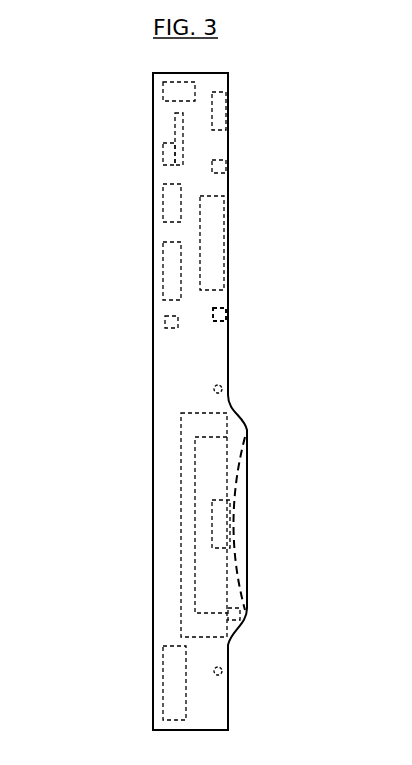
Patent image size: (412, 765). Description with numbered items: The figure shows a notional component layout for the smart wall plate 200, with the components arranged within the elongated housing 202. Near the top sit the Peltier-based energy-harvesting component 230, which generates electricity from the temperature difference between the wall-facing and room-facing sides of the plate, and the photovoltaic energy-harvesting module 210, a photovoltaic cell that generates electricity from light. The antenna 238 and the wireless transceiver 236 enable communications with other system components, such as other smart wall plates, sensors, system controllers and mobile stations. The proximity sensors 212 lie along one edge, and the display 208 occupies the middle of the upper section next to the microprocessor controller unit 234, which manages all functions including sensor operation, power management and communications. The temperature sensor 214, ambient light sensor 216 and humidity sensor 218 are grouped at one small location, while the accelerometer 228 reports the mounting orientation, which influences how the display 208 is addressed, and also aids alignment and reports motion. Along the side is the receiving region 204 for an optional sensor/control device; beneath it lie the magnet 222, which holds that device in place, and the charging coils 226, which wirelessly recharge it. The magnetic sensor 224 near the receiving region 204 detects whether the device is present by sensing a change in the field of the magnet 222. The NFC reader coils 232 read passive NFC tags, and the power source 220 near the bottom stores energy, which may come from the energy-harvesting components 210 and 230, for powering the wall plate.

The smart wall plate 200 is at (270, 364).
The housing 202 is at (152, 80).
The receiving region 204 is at (244, 497).
The display 208 is at (228, 232).
The photovoltaic energy-harvesting module 210 is at (228, 112).
The proximity sensors 212 is at (228, 166).
The temperature sensor 214 is at (262, 287).
The ambient light sensor 216 is at (228, 312).
The humidity sensor 218 is at (262, 313).
The power source 220 is at (172, 675).
The magnet 222 is at (212, 520).
The magnetic sensor 224 is at (240, 612).
The charging coils 226 is at (181, 428).
The accelerometer 228 is at (166, 322).
The Peltier-based energy-harvesting component 230 is at (195, 90).
The NFC reader coils 232 is at (223, 389).
The microprocessor controller unit 234 is at (165, 270).
The wireless transceiver 236 is at (165, 205).
The antenna 238 is at (175, 124).